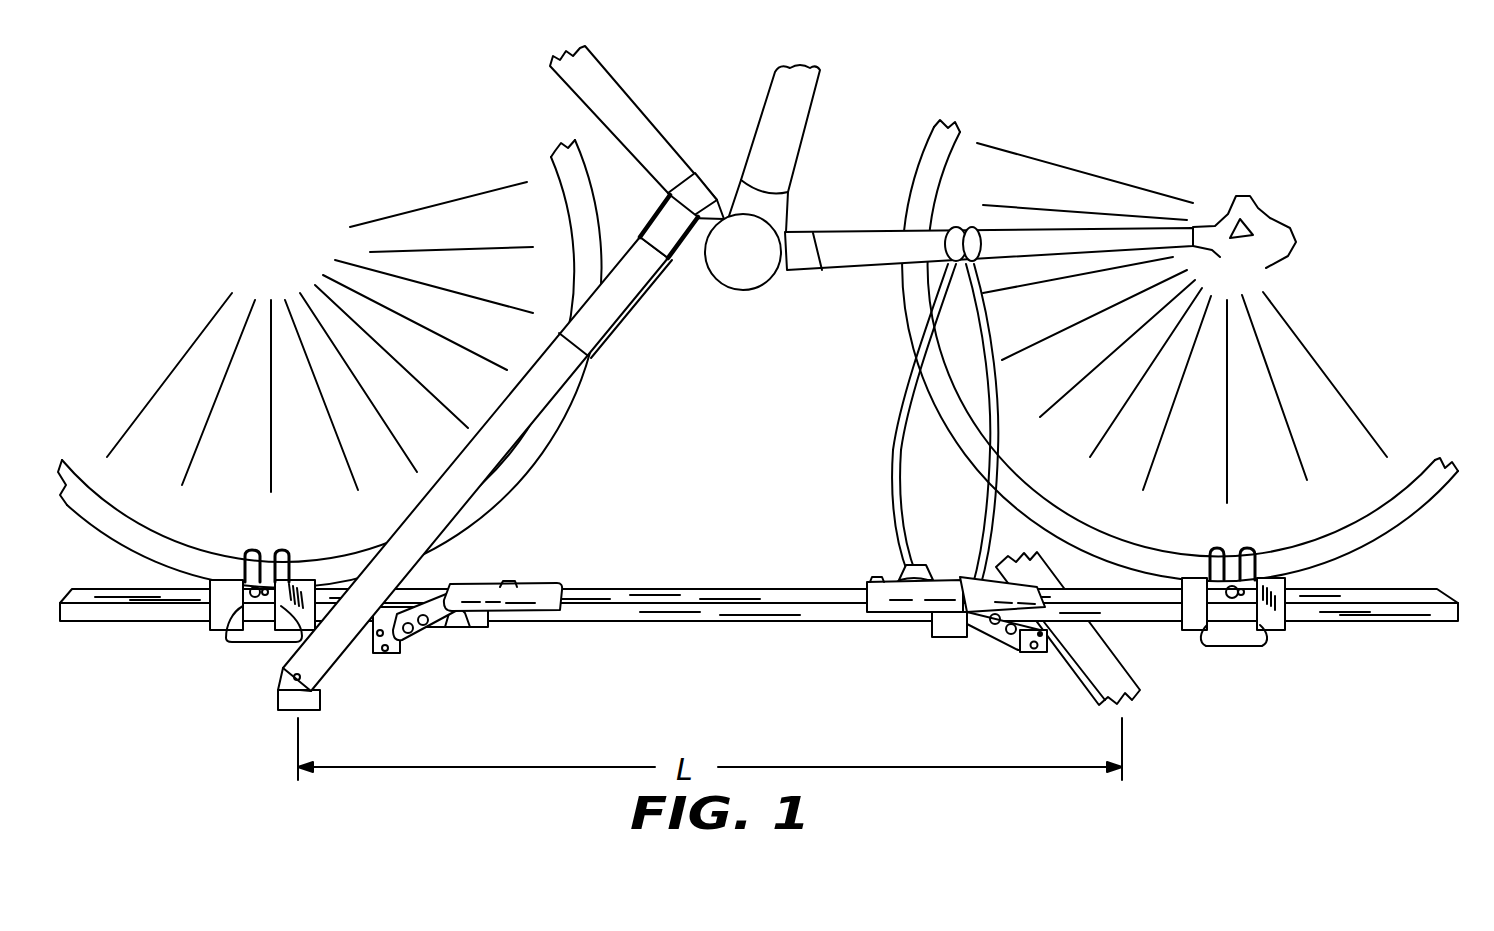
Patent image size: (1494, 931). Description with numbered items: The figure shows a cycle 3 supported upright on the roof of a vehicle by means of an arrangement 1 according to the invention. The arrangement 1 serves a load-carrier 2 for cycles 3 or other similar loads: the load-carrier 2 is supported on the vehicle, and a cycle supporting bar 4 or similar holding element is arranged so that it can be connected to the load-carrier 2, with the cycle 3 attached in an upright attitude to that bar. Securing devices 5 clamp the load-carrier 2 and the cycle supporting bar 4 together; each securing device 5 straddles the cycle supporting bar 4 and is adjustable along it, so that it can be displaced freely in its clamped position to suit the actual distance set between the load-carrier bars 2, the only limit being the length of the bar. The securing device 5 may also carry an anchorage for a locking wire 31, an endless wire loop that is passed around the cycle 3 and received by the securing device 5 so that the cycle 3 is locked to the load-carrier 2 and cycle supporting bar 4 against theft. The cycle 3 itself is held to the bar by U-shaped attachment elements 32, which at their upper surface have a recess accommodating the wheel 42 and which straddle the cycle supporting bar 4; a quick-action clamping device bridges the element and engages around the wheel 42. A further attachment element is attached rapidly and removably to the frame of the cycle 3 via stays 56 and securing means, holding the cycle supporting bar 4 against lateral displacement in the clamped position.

The arrangement 1 is at (759, 476).
The load-carrier 2 is at (1115, 668).
The cycle 3 is at (812, 97).
The cycle supporting bar 4 is at (714, 591).
The securing device 5 is at (519, 582).
The locking wire 31 is at (907, 390).
The attachment element 32 is at (225, 588).
The wheel 42 is at (1395, 523).
The stay 56 is at (498, 434).